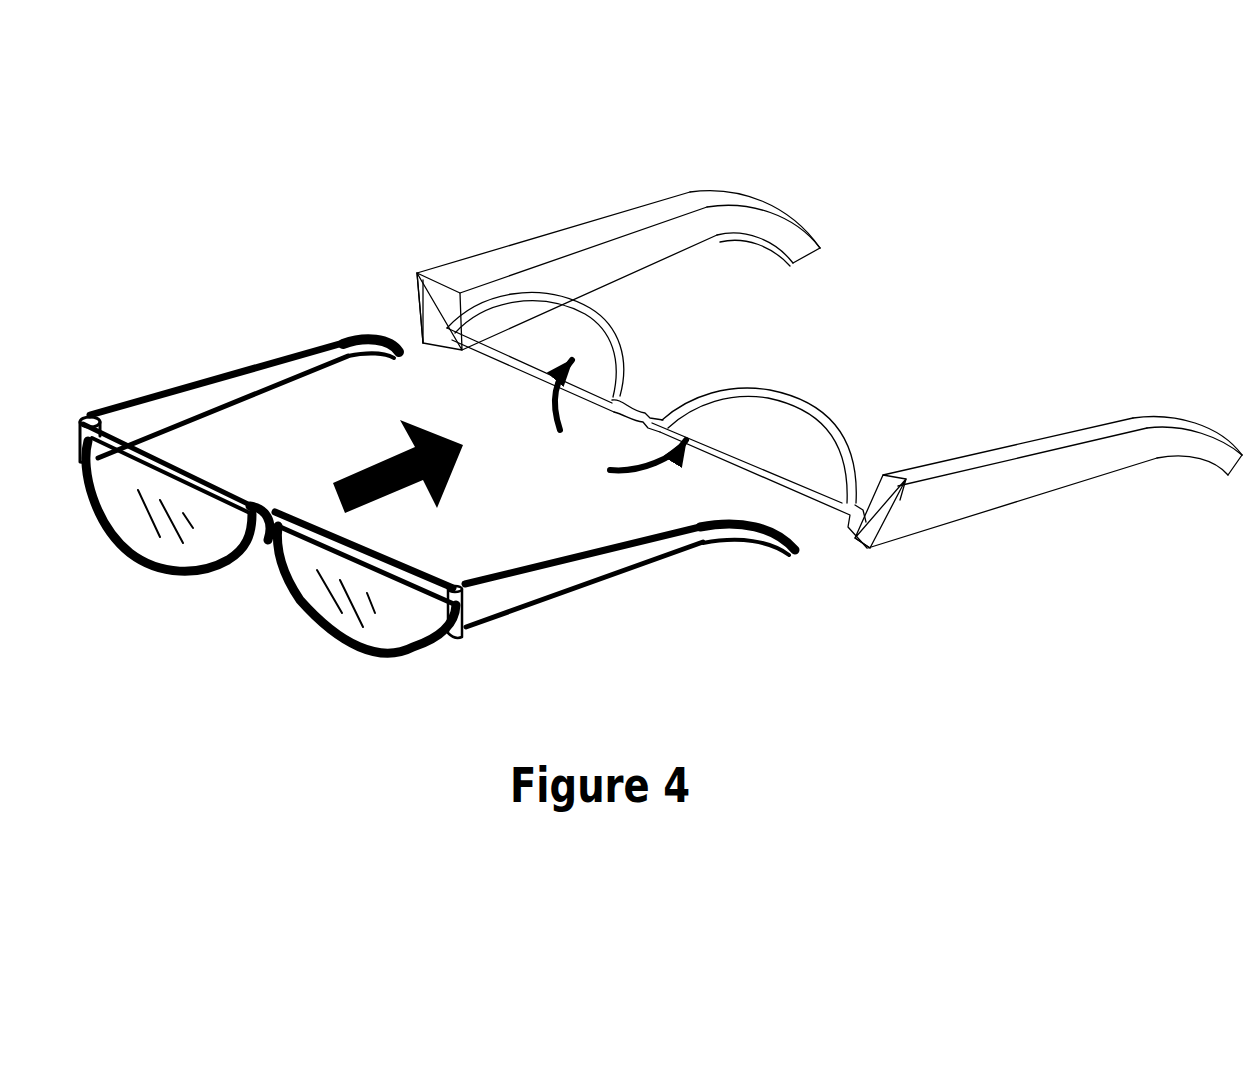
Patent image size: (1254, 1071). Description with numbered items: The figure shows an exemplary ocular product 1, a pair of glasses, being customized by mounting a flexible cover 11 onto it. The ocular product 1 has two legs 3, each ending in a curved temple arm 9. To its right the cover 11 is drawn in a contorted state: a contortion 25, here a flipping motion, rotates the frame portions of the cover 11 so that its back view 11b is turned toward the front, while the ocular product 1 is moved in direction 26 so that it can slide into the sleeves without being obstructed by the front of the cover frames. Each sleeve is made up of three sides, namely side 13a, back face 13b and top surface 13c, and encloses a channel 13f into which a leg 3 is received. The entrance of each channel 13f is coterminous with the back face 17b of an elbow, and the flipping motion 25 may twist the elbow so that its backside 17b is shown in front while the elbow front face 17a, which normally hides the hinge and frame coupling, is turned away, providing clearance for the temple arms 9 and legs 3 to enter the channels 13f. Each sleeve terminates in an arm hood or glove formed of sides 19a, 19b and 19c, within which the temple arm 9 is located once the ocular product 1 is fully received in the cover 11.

The ocular product 1 is at (238, 629).
The leg 3 is at (183, 385).
The temple arm 9 is at (335, 342).
The cover 11 is at (976, 157).
The back view of cover 11b is at (669, 399).
The side of sleeve 13a is at (1012, 498).
The back face of sleeve 13b is at (589, 292).
The top surface of sleeve 13c is at (993, 452).
The channel 13f is at (438, 292).
The elbow front face 17a is at (415, 309).
The back face of elbow 17b is at (433, 321).
The side of glove 19a is at (1194, 450).
The side of glove 19b is at (763, 235).
The side of glove 19c is at (750, 203).
The contortion 25 is at (620, 420).
The direction 26 is at (398, 466).